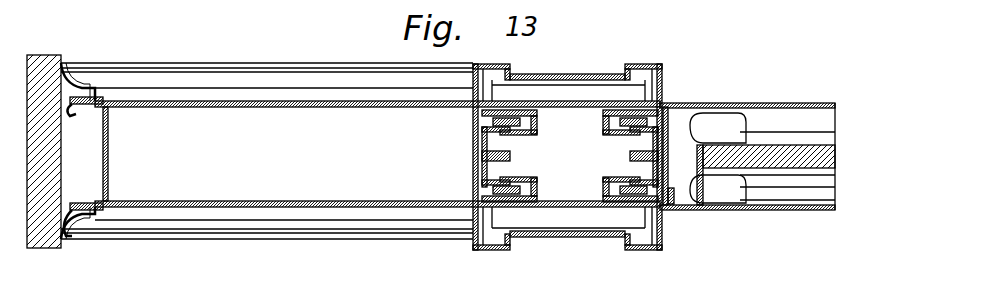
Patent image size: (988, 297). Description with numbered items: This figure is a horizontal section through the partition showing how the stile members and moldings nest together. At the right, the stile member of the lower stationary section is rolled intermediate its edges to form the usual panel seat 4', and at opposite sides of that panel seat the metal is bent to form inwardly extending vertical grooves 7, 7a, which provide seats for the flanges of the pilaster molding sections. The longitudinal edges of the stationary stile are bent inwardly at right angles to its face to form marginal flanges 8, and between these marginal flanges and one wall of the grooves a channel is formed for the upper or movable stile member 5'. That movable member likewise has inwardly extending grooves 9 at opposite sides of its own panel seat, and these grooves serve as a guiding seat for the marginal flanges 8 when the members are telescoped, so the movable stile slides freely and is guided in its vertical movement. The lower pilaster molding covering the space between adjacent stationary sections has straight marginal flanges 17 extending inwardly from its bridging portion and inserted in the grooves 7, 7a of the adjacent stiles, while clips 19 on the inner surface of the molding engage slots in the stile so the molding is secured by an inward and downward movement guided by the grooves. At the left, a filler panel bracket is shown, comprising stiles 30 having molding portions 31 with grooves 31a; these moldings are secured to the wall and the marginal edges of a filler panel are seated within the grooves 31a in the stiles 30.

The molding portion 31 is at (88, 65).
The groove 31a is at (83, 108).
The stile 30 is at (250, 200).
The marginal flange 17 is at (578, 76).
The clip 19 is at (490, 112).
The groove 9 is at (603, 135).
The marginal flange 8 is at (608, 104).
The movable stile member 5' is at (518, 157).
The groove 7 is at (666, 128).
The groove 7a is at (663, 195).
The panel seat 4' is at (747, 146).